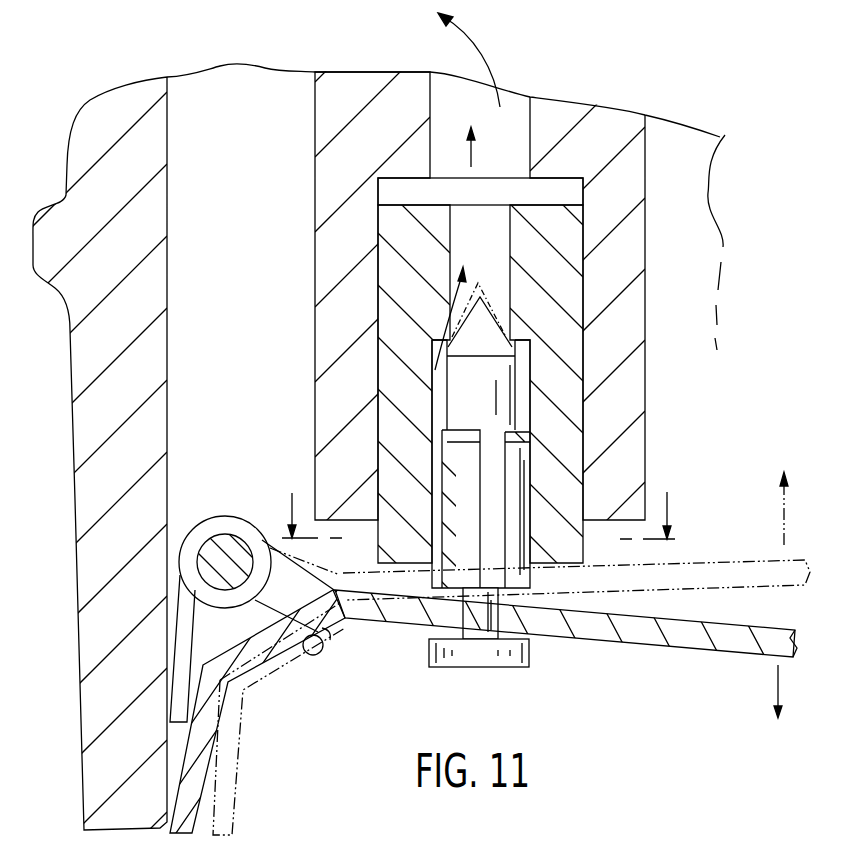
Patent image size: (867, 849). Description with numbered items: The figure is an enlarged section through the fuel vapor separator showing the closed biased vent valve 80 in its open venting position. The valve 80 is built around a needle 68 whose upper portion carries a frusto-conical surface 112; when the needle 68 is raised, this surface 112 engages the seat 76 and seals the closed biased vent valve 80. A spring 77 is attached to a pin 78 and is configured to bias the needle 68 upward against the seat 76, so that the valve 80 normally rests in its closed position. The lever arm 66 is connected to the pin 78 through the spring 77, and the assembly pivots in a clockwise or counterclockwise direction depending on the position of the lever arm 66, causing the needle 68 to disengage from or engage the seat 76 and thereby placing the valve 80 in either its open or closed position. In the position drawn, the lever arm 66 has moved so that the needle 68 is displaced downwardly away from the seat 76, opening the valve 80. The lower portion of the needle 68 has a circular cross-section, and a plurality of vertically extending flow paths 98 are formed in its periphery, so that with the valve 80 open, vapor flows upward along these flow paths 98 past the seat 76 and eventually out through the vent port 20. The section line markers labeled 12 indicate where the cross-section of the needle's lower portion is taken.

The vent port 20 is at (490, 53).
The closed biased vent valve 80 is at (683, 152).
The vertically extending flow paths 98 is at (390, 657).
The frusto-conical surface 112 is at (483, 300).
The seat 76 is at (545, 423).
The section line 12 is at (479, 501).
The pin 78 is at (228, 548).
The spring 77 is at (182, 637).
The needle 68 is at (450, 410).
The lever arm 66 is at (627, 633).